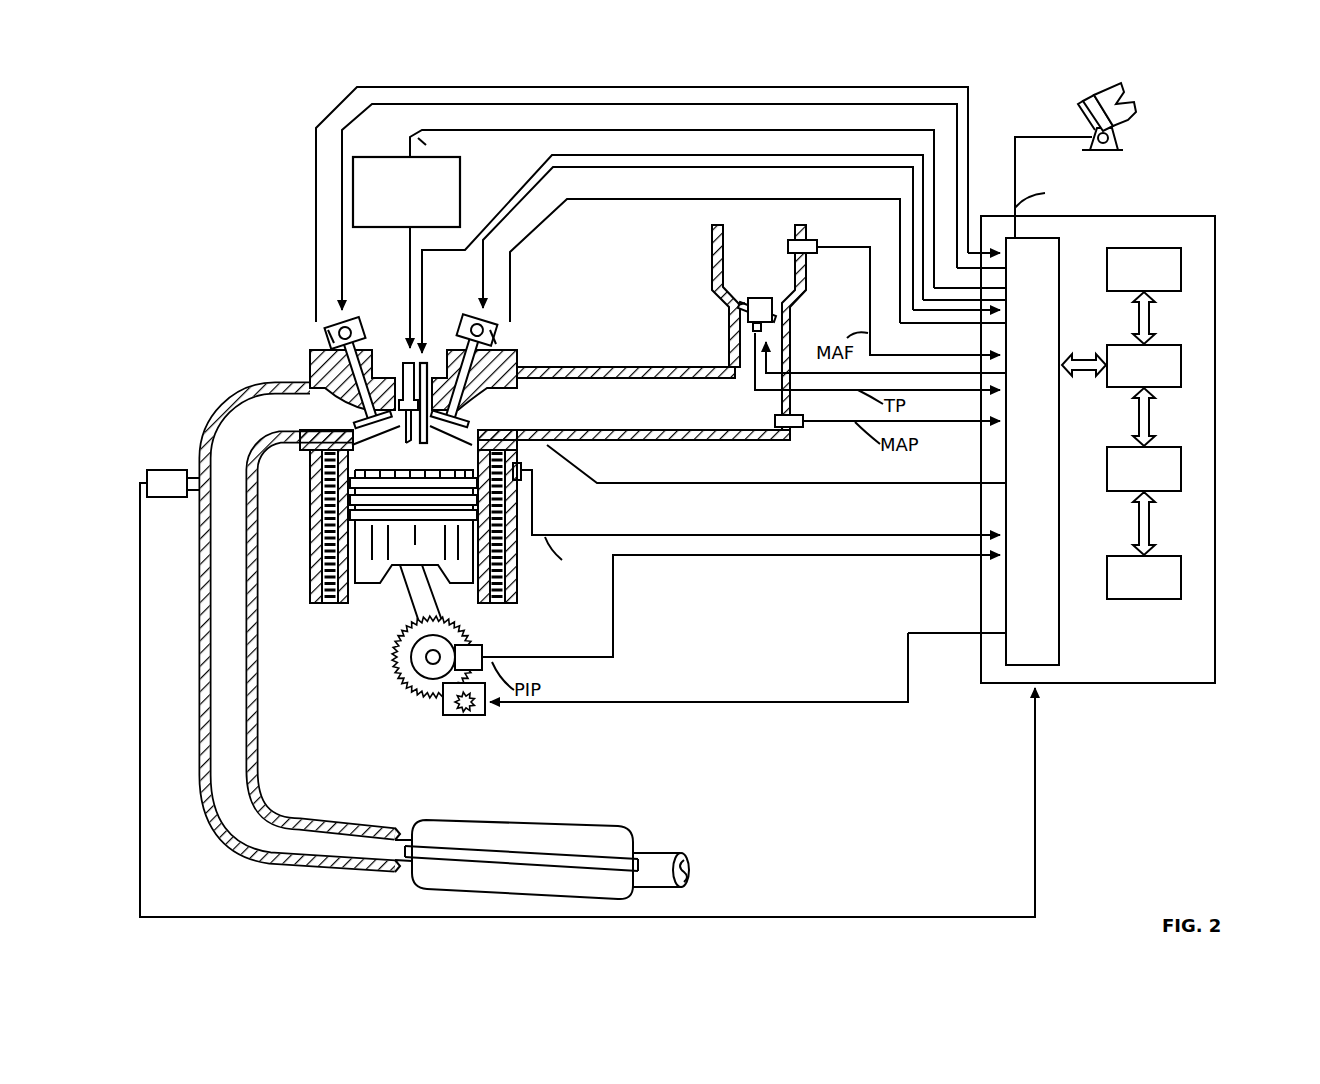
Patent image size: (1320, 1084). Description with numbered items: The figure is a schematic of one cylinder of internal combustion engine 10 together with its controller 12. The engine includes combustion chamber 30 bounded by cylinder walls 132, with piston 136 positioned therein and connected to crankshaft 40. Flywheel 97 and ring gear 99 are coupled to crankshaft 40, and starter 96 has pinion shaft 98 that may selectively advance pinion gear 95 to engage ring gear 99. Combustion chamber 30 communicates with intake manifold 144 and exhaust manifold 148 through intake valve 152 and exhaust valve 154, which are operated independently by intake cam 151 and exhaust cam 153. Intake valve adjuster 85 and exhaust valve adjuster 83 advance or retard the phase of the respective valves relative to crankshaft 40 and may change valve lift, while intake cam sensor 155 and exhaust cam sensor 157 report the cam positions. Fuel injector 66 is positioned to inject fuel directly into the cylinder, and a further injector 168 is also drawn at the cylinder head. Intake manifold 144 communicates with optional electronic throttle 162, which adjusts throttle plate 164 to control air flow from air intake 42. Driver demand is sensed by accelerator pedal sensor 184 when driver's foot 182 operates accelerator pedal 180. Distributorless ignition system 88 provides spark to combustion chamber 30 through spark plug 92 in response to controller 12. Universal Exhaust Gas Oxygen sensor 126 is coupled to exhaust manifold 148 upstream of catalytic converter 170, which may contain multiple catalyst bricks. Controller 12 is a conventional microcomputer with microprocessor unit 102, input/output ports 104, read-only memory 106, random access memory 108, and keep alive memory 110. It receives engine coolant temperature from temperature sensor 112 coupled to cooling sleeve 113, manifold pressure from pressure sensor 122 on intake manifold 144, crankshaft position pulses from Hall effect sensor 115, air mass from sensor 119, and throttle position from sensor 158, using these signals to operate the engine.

The internal combustion engine 10 is at (243, 298).
The controller 12 is at (1205, 216).
The combustion chamber 30 is at (410, 452).
The crankshaft 40 is at (424, 688).
The air intake 42 is at (764, 275).
The fuel injector 66 is at (523, 442).
The exhaust valve adjuster 83 is at (345, 300).
The intake valve adjuster 85 is at (512, 346).
The distributorless ignition system 88 is at (370, 157).
The spark plug 92 is at (404, 362).
The pinion gear 95 is at (470, 714).
The starter 96 is at (481, 714).
The flywheel 97 is at (410, 650).
The pinion shaft 98 is at (458, 712).
The ring gear 99 is at (432, 698).
The microprocessor unit 102 is at (1182, 362).
The input/output ports 104 is at (1060, 248).
The read-only memory 106 is at (1182, 266).
The random access memory 108 is at (1182, 466).
The keep alive memory 110 is at (1182, 575).
The temperature sensor 112 is at (528, 482).
The cooling sleeve 113 is at (500, 552).
The Hall effect sensor 115 is at (482, 648).
The air mass sensor 119 is at (800, 256).
The pressure sensor 122 is at (800, 428).
The Universal Exhaust Gas Oxygen sensor 126 is at (150, 470).
The cylinder walls 132 is at (340, 600).
The piston 136 is at (395, 580).
The intake manifold 144 is at (712, 416).
The exhaust manifold 148 is at (294, 423).
The intake cam 151 is at (474, 320).
The intake valve 152 is at (460, 425).
The exhaust cam 153 is at (355, 320).
The exhaust valve 154 is at (335, 396).
The intake cam sensor 155 is at (498, 336).
The exhaust cam sensor 157 is at (328, 335).
The throttle position sensor 158 is at (752, 334).
The electronic throttle 162 is at (772, 305).
The throttle plate 164 is at (738, 310).
The direct fuel injector 168 is at (428, 365).
The catalytic converter 170 is at (432, 820).
The accelerator pedal 180 is at (1085, 112).
The driver's foot 182 is at (1133, 103).
The accelerator pedal sensor 184 is at (1118, 137).